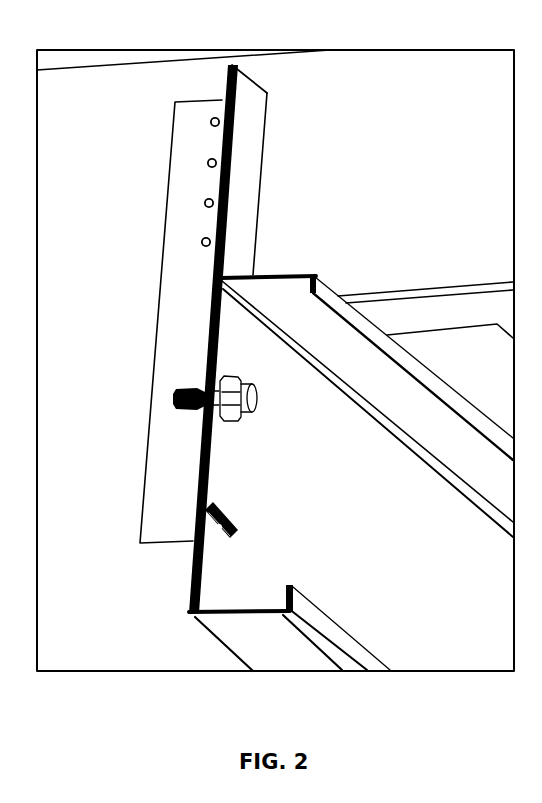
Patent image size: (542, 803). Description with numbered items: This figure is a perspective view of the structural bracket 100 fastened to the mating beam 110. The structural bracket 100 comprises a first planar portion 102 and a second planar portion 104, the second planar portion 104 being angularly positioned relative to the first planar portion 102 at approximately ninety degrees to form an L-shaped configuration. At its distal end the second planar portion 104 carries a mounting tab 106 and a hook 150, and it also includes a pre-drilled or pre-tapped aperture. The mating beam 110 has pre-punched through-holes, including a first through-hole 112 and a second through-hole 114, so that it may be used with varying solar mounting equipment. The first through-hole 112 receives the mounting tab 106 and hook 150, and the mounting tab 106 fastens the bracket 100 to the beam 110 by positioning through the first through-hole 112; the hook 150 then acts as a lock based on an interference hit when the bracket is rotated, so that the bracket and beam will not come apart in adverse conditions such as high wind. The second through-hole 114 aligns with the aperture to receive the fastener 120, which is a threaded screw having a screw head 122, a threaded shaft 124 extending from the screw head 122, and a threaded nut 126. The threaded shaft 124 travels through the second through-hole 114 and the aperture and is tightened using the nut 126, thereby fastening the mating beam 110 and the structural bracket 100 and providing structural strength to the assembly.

The structural bracket 100 is at (166, 142).
The first planar portion 102 is at (207, 100).
The second planar portion 104 is at (252, 93).
The mounting tab 106 is at (226, 518).
The mating beam 110 is at (301, 262).
The first through-hole 112 is at (236, 537).
The second through-hole 114 is at (228, 425).
The fastener 120 is at (253, 429).
The screw head 122 is at (262, 393).
The threaded shaft 124 is at (166, 397).
The threaded nut 126 is at (216, 354).
The hook 150 is at (187, 596).